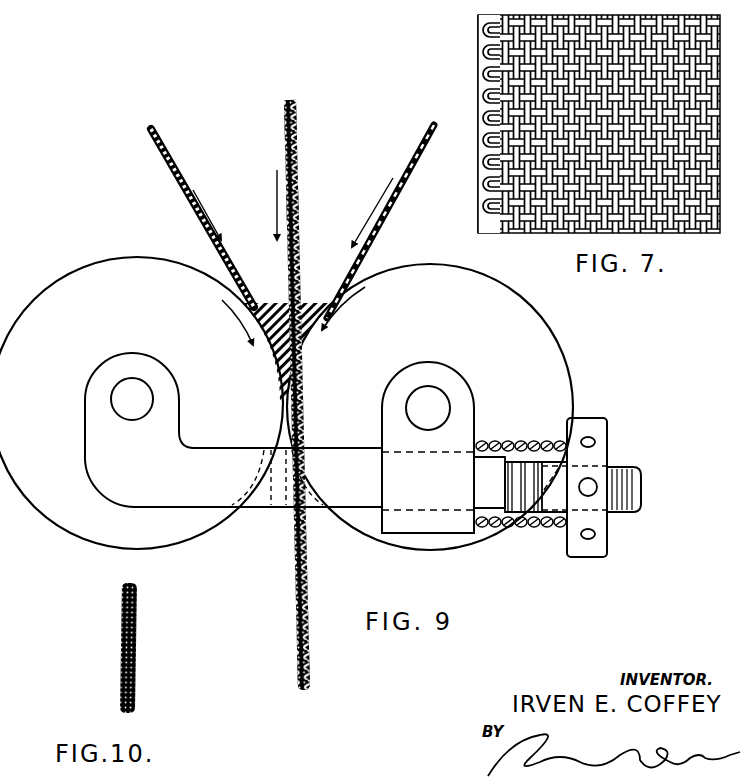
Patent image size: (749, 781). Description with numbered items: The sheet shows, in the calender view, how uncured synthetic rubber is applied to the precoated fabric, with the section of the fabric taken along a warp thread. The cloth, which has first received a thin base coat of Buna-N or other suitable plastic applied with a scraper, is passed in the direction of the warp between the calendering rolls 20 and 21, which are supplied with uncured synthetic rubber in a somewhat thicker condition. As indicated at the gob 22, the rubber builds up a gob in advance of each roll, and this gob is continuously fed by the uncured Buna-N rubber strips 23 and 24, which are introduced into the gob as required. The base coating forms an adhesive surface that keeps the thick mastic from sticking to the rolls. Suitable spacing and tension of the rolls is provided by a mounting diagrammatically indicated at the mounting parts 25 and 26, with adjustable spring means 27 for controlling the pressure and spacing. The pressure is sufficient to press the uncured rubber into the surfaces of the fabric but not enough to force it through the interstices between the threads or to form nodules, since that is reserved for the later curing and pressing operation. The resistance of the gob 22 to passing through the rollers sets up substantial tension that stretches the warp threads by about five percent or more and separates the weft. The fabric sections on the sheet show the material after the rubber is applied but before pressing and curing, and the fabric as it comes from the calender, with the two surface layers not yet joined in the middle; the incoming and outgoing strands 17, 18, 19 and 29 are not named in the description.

The yarn strand 17 is at (286, 122).
The wrapped strand 18 is at (296, 162).
The filament core 19 is at (300, 210).
The calendering roll 20 is at (136, 270).
The calendering roll 21 is at (440, 280).
The gob 22 is at (300, 308).
The uncured Buna-N rubber strip 23 is at (410, 168).
The uncured Buna-N rubber strip 24 is at (173, 181).
The mounting 25 is at (205, 488).
The mounting 26 is at (392, 524).
The adjustable spring means 27 is at (527, 522).
The finished strand 29 is at (268, 648).